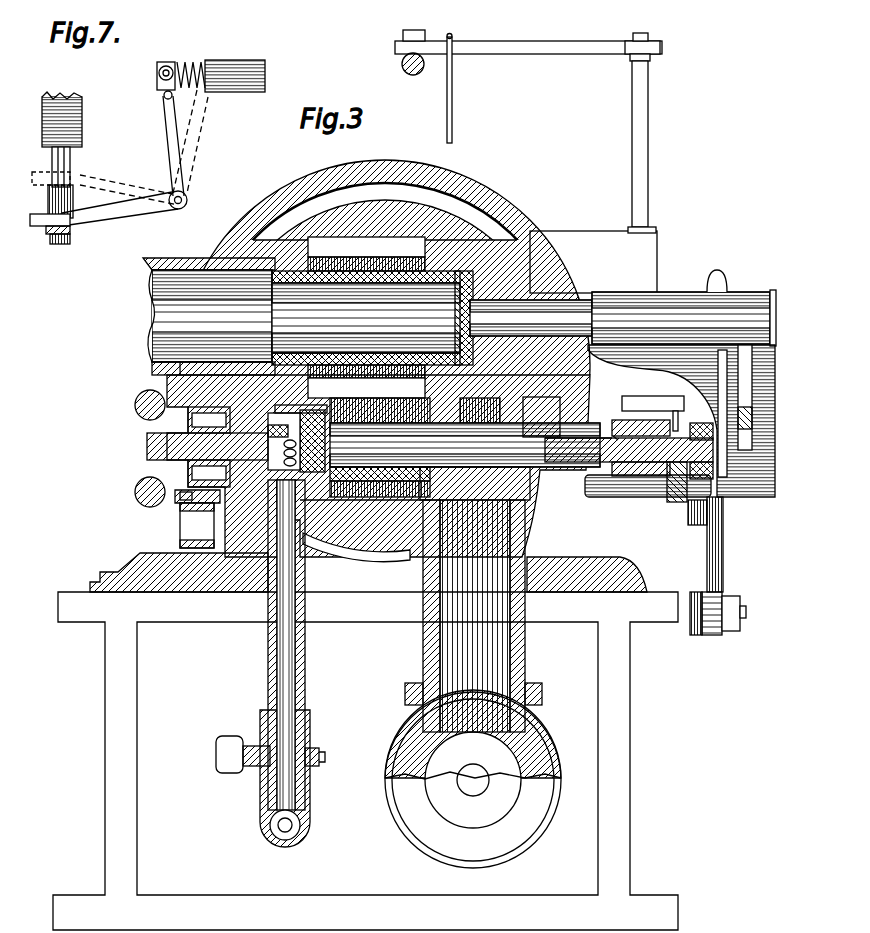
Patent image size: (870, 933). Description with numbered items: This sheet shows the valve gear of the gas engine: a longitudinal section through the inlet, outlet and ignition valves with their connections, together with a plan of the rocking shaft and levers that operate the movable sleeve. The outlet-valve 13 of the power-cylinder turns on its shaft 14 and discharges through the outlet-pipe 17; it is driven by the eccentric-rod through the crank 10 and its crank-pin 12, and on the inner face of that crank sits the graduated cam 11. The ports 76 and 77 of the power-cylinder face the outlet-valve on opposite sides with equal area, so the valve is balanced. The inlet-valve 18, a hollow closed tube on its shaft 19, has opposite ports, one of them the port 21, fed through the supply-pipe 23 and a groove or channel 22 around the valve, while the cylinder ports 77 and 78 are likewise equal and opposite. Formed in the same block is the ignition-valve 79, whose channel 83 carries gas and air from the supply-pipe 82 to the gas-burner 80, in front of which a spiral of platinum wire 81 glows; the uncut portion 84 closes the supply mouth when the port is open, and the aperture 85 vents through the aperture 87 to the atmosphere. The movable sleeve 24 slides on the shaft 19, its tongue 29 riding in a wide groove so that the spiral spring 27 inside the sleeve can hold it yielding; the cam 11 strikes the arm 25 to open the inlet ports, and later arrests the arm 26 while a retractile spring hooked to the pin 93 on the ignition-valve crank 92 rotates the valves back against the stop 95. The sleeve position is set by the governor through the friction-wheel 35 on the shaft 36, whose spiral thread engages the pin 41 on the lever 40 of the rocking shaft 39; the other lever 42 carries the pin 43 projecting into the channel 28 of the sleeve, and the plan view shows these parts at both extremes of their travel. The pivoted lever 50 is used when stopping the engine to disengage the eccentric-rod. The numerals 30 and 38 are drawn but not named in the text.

In FIG. 3, the outlet-valve crank 10 is at (770, 379).
In FIG. 3, the graduated cam 11 is at (620, 497).
In FIG. 3, the crank-pin 12 is at (745, 400).
In FIG. 3, the outlet-valve 13 is at (432, 318).
In FIG. 3, the outlet-valve shaft 14 is at (777, 320).
In FIG. 3, the outlet-pipe 17 is at (209, 316).
In FIG. 3, the inlet-valve 18 is at (465, 445).
In FIG. 7, the inlet-valve shaft 19 is at (72, 160).
In FIG. 3, the inlet-valve port 21 is at (490, 448).
In FIG. 3, the groove or channel 22 is at (480, 410).
In FIG. 3, the supply-pipe 23 is at (473, 684).
In FIG. 7, the movable sleeve 24 is at (47, 203).
In FIG. 3, the movable sleeve 24 is at (604, 463).
In FIG. 3, the arm 25 is at (672, 502).
In FIG. 7, the arm 26 is at (30, 220).
In FIG. 3, the arm 26 is at (578, 446).
In FIG. 3, the spiral spring 27 is at (641, 441).
In FIG. 7, the channel 28 is at (45, 231).
In FIG. 3, the tongue 29 is at (613, 436).
In FIG. 7, the nut 30 is at (52, 244).
In FIG. 3, the intermediate beveled friction-wheel 35 is at (463, 89).
In FIG. 7, the shaft 36 is at (191, 62).
In FIG. 3, the shaft 36 is at (422, 72).
In FIG. 7, the pin 38 is at (164, 97).
In FIG. 7, the rocking shaft 39 is at (189, 198).
In FIG. 3, the rocking shaft 39 is at (649, 133).
In FIG. 7, the lever 40 is at (168, 146).
In FIG. 3, the lever 40 is at (528, 48).
In FIG. 7, the pin 41 is at (156, 76).
In FIG. 3, the pin 41 is at (414, 24).
In FIG. 7, the lever 42 is at (120, 209).
In FIG. 3, the lever 42 is at (653, 403).
In FIG. 7, the pin 43 is at (79, 216).
In FIG. 3, the pin 43 is at (667, 421).
In FIG. 3, the pivoted lever 50 is at (728, 275).
In FIG. 3, the power-cylinder port 76 is at (366, 247).
In FIG. 3, the power-cylinder port 77 is at (366, 388).
In FIG. 3, the power-cylinder port 78 is at (365, 504).
In FIG. 3, the ignition-valve 79 is at (248, 448).
In FIG. 3, the gas-burner 80 is at (380, 482).
In FIG. 3, the platinum wire spiral 81 is at (284, 441).
In FIG. 3, the supply-pipe 82 is at (285, 663).
In FIG. 3, the groove or channel 83 is at (287, 494).
In FIG. 3, the uncut portion of ignition-valve 84 is at (302, 433).
In FIG. 3, the aperture 85 is at (372, 410).
In FIG. 3, the aperture 87 is at (275, 409).
In FIG. 3, the ignition-valve crank 92 is at (178, 518).
In FIG. 3, the pin 93 is at (197, 525).
In FIG. 3, the stop 95 is at (182, 499).